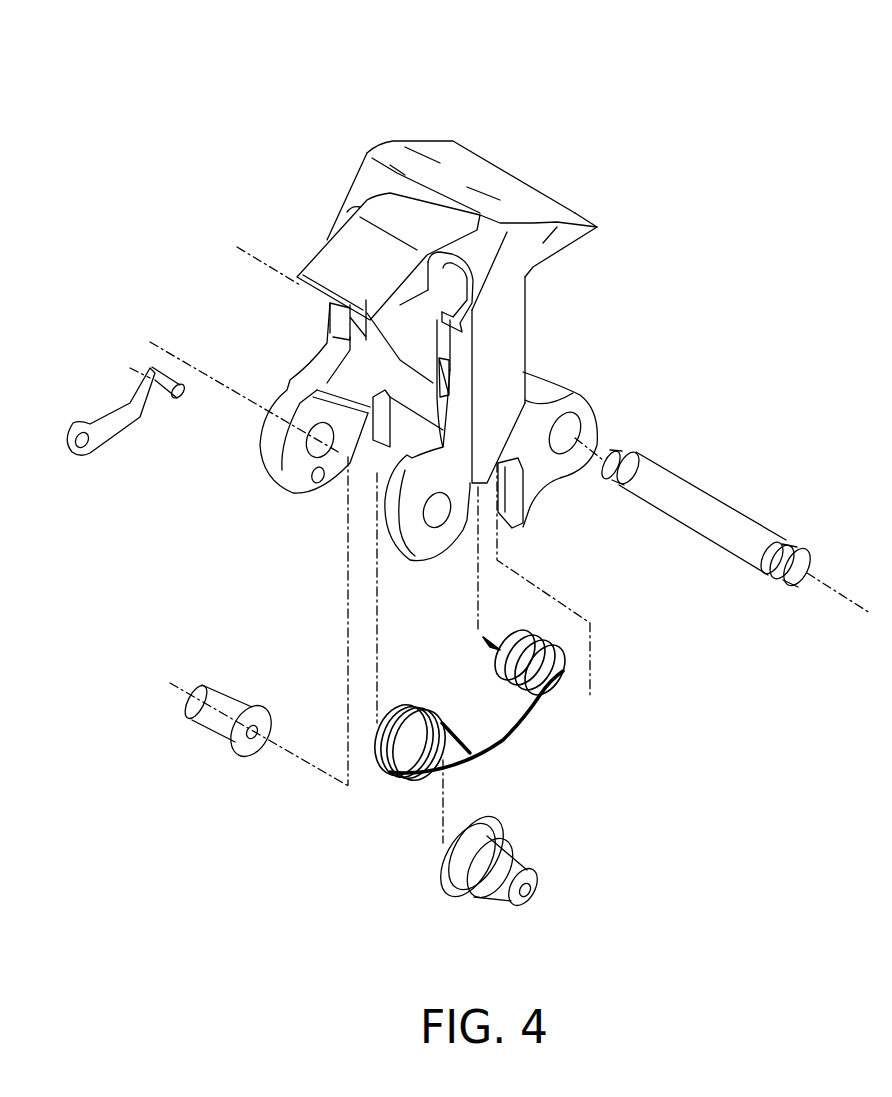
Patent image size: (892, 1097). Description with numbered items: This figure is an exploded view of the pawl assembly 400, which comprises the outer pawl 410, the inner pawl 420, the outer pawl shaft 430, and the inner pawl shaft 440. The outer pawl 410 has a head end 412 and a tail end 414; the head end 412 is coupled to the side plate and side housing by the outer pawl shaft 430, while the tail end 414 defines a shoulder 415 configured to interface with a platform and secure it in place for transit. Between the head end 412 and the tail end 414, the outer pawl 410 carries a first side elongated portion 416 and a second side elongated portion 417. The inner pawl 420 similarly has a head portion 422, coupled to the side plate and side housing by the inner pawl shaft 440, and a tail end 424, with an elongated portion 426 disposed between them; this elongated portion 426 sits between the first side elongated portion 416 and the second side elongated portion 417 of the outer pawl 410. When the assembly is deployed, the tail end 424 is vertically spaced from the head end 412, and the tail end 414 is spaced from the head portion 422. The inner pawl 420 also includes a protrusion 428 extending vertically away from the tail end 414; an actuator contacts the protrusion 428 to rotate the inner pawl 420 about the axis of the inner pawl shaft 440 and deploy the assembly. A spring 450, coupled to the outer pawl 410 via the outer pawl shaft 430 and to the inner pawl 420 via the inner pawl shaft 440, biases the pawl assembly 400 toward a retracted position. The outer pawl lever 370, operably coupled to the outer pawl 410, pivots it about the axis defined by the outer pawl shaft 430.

The pawl assembly 400 is at (592, 138).
The outer pawl 410 is at (440, 163).
The head end 412 is at (295, 463).
The tail end 414 is at (575, 216).
The shoulder 415 is at (533, 268).
The first side elongated portion 416 is at (500, 337).
The second side elongated portion 417 is at (337, 317).
The inner pawl 420 is at (333, 252).
The head portion 422 is at (583, 407).
The tail end 424 is at (323, 268).
The elongated portion 426 is at (405, 332).
The protrusion 428 is at (530, 494).
The outer pawl shaft 430 is at (223, 703).
The inner pawl shaft 440 is at (733, 533).
The spring 450 is at (560, 672).
The outer pawl lever 370 is at (110, 420).